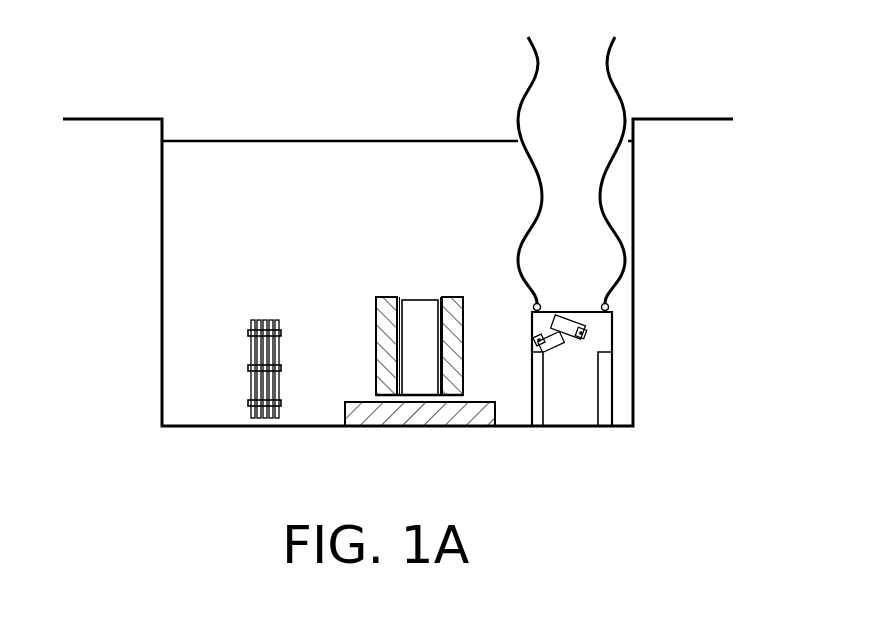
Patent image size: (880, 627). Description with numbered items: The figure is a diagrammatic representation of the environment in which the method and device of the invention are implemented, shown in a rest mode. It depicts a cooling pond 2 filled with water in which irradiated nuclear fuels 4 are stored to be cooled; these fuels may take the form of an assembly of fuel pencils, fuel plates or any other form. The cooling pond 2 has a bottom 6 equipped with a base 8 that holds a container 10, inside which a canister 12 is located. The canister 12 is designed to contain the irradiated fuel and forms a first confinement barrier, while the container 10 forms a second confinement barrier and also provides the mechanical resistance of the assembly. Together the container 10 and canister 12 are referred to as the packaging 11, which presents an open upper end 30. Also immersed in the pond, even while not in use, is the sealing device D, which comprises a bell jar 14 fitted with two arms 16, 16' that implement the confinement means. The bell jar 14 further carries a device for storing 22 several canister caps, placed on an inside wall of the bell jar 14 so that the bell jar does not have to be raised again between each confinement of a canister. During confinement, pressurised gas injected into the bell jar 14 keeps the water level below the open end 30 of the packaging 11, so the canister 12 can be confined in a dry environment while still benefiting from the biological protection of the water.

The cooling pond 2 is at (330, 135).
The irradiated nuclear fuels 4 is at (262, 318).
The bottom 6 is at (620, 427).
The base 8 is at (470, 427).
The container 10 is at (388, 356).
The packaging 11 is at (391, 310).
The canister 12 is at (423, 303).
The bell jar 14 is at (612, 400).
The arm 16 is at (577, 293).
The arm 16' is at (520, 323).
The device for storing canister caps 22 is at (600, 367).
The open end 30 is at (399, 297).
The sealing device D is at (615, 335).